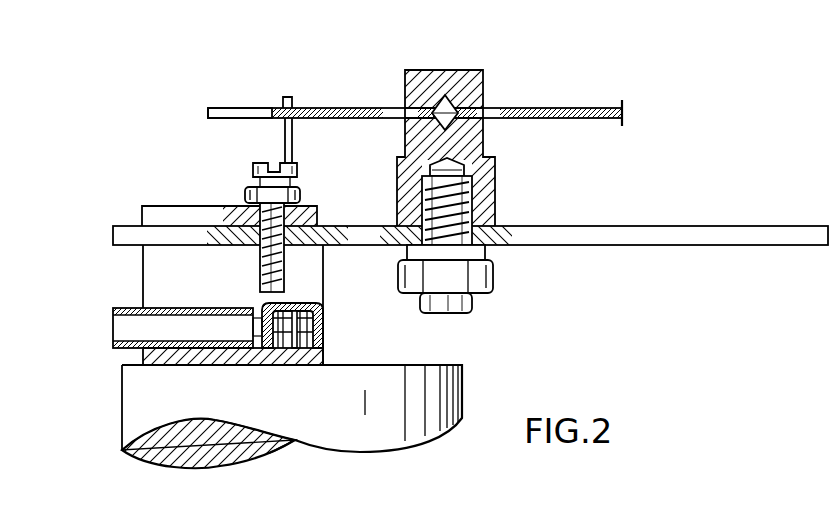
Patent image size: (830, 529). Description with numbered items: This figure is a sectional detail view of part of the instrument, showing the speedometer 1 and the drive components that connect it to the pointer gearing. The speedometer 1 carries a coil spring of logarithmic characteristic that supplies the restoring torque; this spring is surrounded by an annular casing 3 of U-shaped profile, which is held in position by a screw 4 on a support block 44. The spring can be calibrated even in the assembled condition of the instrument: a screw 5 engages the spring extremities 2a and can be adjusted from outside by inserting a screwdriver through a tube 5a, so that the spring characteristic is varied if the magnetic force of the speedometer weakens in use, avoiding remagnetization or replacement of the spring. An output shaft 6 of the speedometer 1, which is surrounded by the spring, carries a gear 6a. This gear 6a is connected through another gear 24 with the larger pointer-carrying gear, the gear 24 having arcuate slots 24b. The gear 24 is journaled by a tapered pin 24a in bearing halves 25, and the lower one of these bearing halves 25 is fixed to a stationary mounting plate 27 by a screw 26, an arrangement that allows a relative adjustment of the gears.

The speedometer 1 is at (138, 405).
The spring extremities 2a is at (324, 345).
The annular casing 3 is at (262, 312).
The screw 4 is at (255, 167).
The screw 5 is at (293, 367).
The tube 5a is at (125, 330).
The output shaft 6 is at (291, 97).
The gear 6a is at (208, 112).
The gear 24 is at (607, 107).
The tapered pin 24a is at (445, 95).
The arcuate slots 24b is at (396, 118).
The bearing halves 25 is at (465, 96).
The screw 26 is at (497, 201).
The stationary mounting plate 27 is at (787, 227).
The support block 44 is at (158, 272).